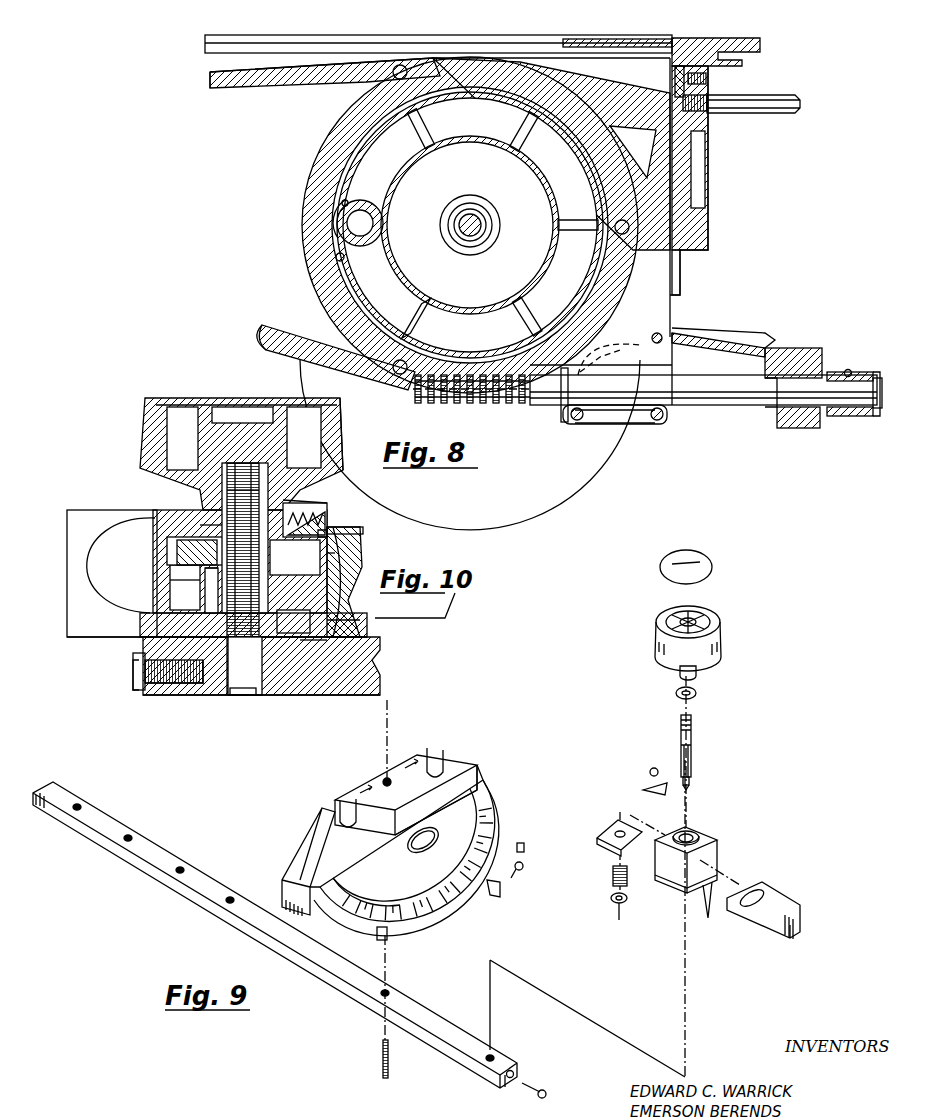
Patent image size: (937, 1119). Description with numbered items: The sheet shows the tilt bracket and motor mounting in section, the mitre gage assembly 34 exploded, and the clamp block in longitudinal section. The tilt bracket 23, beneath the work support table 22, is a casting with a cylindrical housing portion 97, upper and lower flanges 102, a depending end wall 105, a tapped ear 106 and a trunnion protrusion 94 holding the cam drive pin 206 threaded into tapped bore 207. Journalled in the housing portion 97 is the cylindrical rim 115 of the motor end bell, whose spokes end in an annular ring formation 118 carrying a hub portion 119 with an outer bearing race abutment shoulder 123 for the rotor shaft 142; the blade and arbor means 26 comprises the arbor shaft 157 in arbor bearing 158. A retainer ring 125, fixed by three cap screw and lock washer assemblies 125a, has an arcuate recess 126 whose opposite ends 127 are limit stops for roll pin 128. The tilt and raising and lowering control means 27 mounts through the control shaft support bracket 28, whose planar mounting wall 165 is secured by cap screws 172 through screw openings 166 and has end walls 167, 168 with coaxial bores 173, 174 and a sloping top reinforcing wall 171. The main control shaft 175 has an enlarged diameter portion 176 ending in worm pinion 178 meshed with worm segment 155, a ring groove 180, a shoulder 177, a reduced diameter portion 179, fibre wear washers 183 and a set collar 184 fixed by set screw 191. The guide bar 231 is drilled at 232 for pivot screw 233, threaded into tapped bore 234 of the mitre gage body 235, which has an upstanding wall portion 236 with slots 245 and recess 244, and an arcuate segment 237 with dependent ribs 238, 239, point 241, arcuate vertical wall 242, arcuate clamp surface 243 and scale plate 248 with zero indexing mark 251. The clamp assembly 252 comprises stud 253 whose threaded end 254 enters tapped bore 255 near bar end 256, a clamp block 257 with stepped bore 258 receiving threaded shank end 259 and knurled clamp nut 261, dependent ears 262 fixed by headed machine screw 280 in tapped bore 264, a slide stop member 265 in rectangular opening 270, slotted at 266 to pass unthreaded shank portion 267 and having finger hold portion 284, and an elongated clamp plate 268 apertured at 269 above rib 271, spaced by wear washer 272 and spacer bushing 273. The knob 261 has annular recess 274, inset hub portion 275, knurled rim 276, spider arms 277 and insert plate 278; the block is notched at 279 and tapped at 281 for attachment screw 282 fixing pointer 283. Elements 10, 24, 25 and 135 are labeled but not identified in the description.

In FIG. 9, the assembly axis 10 is at (640, 819).
In FIG. 8, the work support table 22 is at (712, 44).
In FIG. 8, the tilt bracket 23 is at (264, 361).
In FIG. 8, the housing 24 is at (705, 140).
In FIG. 8, the screw 25 is at (706, 79).
In FIG. 8, the blade and arbor means 26 is at (336, 257).
In FIG. 8, the tilt and raising and lowering control means 27 is at (703, 325).
In FIG. 8, the control shaft support bracket 28 is at (772, 342).
In FIG. 10, the mitre gage assembly 34 is at (291, 712).
In FIG. 9, the mitre gage assembly 34 is at (290, 798).
In FIG. 8, the trunnion protrusion 94 is at (700, 118).
In FIG. 8, the cylindrical housing portion 97 is at (372, 104).
In FIG. 8, the upper and lower flanges 102 is at (236, 85).
In FIG. 8, the depending end wall 105 is at (700, 160).
In FIG. 8, the tapped ear 106 is at (680, 230).
In FIG. 8, the cylindrical rim 115 is at (345, 124).
In FIG. 8, the annular ring formation 118 is at (472, 225).
In FIG. 8, the hub portion 119 is at (493, 219).
In FIG. 8, the outer bearing race abutment shoulder 123 is at (480, 215).
In FIG. 8, the retainer ring 125 is at (416, 54).
In FIG. 8, the cap screw and lock washer assemblies 125a is at (401, 64).
In FIG. 8, the arcuate recess 126 is at (352, 152).
In FIG. 8, the opposite ends of arcuate recess 127 is at (347, 205).
In FIG. 8, the roll pin 128 is at (345, 196).
In FIG. 8, the disc 135 is at (470, 225).
In FIG. 8, the rotor shaft 142 is at (480, 232).
In FIG. 8, the worm segment 155 is at (498, 405).
In FIG. 8, the arbor shaft 157 is at (370, 225).
In FIG. 8, the arbor bearing 158 is at (384, 212).
In FIG. 8, the planar mounting wall 165 is at (630, 420).
In FIG. 8, the through screw openings 166 is at (660, 335).
In FIG. 8, the end wall 167 is at (588, 358).
In FIG. 8, the end wall 168 is at (785, 430).
In FIG. 8, the sloping top reinforcing wall 171 is at (745, 340).
In FIG. 8, the cap screws 172 is at (568, 424).
In FIG. 8, the through bore 173 is at (598, 372).
In FIG. 8, the through bore 174 is at (812, 348).
In FIG. 8, the main control shaft 175 is at (735, 412).
In FIG. 8, the enlarged diameter portion 176 is at (617, 420).
In FIG. 8, the shoulder 177 is at (773, 412).
In FIG. 8, the worm pinion 178 is at (448, 400).
In FIG. 8, the reduced diameter portion 179 is at (883, 392).
In FIG. 8, the ring groove 180 is at (561, 408).
In FIG. 8, the fibre wear washer 183 is at (768, 372).
In FIG. 8, the set collar 184 is at (876, 372).
In FIG. 8, the set screw 191 is at (855, 358).
In FIG. 8, the cam drive pin 206 is at (775, 96).
In FIG. 8, the tapped bore 207 is at (712, 96).
In FIG. 10, the slide or guide bar 231 is at (372, 660).
In FIG. 9, the slide or guide bar 231 is at (148, 842).
In FIG. 9, the drilled hole 232 is at (388, 993).
In FIG. 9, the pivot screw 233 is at (389, 1066).
In FIG. 9, the tapped bore 234 is at (386, 778).
In FIG. 10, the mitre gage body 235 is at (360, 542).
In FIG. 9, the mitre gage body 235 is at (467, 800).
In FIG. 9, the upstanding wall portion 236 is at (455, 763).
In FIG. 9, the arcuate segment 237 is at (290, 866).
In FIG. 10, the dependent rib 238 is at (318, 647).
In FIG. 9, the dependent rib 238 is at (500, 893).
In FIG. 9, the dependent ribs 239 is at (524, 848).
In FIG. 10, the point 241 is at (333, 554).
In FIG. 9, the point 241 is at (403, 808).
In FIG. 9, the arcuate vertical wall 242 is at (507, 817).
In FIG. 10, the arcuate clamp surface 243 is at (325, 562).
In FIG. 9, the arcuate clamp surface 243 is at (513, 830).
In FIG. 9, the circular laterally centered recess 244 is at (418, 842).
In FIG. 9, the upwardly opening slots 245 is at (342, 800).
In FIG. 10, the arcuate scale plate 248 is at (363, 528).
In FIG. 9, the arcuate scale plate 248 is at (407, 872).
In FIG. 9, the zero indexing mark 251 is at (468, 836).
In FIG. 9, the clamp assembly 252 is at (704, 726).
In FIG. 10, the upstanding stud 253 is at (245, 578).
In FIG. 9, the upstanding stud 253 is at (692, 745).
In FIG. 10, the reduced diameter threaded end 254 is at (243, 690).
In FIG. 9, the reduced diameter threaded end 254 is at (691, 768).
In FIG. 10, the tapped bore 255 is at (238, 700).
In FIG. 9, the tapped bore 255 is at (492, 1056).
In FIG. 9, the end face of bar 256 is at (514, 1072).
In FIG. 10, the clamp block 257 is at (190, 517).
In FIG. 9, the clamp block 257 is at (717, 847).
In FIG. 10, the stepped through vertical bore 258 is at (202, 533).
In FIG. 9, the stepped through vertical bore 258 is at (699, 836).
In FIG. 10, the threaded shank end 259 is at (222, 507).
In FIG. 9, the threaded shank end 259 is at (680, 723).
In FIG. 10, the knurled clamp nut 261 is at (130, 430).
In FIG. 9, the knurled clamp nut 261 is at (728, 614).
In FIG. 10, the dependent laterally spaced ears 262 is at (153, 692).
In FIG. 9, the dependent laterally spaced ears 262 is at (707, 911).
In FIG. 10, the tapped bore 264 is at (183, 695).
In FIG. 9, the tapped bore 264 is at (510, 1077).
In FIG. 10, the slide stop member 265 is at (88, 648).
In FIG. 9, the slide stop member 265 is at (757, 942).
In FIG. 10, the slot 266 is at (337, 630).
In FIG. 9, the slot 266 is at (752, 896).
In FIG. 10, the unthreaded shank portion 267 is at (142, 625).
In FIG. 9, the unthreaded shank portion 267 is at (680, 748).
In FIG. 10, the elongated clamp plate 268 is at (170, 552).
In FIG. 9, the elongated clamp plate 268 is at (613, 843).
In FIG. 10, the aperture 269 is at (245, 538).
In FIG. 9, the aperture 269 is at (617, 818).
In FIG. 10, the rectangular opening 270 is at (142, 634).
In FIG. 9, the rectangular opening 270 is at (683, 883).
In FIG. 10, the inwardly extending rib 271 is at (168, 593).
In FIG. 10, the wear washer 272 is at (292, 621).
In FIG. 9, the wear washer 272 is at (627, 900).
In FIG. 10, the spacer bushing 273 is at (212, 588).
In FIG. 9, the spacer bushing 273 is at (612, 876).
In FIG. 10, the annular recess 274 is at (155, 397).
In FIG. 9, the annular recess 274 is at (668, 630).
In FIG. 10, the inset hub portion 275 is at (285, 450).
In FIG. 9, the inset hub portion 275 is at (712, 630).
In FIG. 10, the knurled rim 276 is at (343, 413).
In FIG. 9, the knurled rim 276 is at (660, 655).
In FIG. 9, the spider arms 277 is at (682, 616).
In FIG. 10, the snap-in insert plate 278 is at (203, 397).
In FIG. 9, the snap-in insert plate 278 is at (710, 563).
In FIG. 10, the notch 279 is at (326, 500).
In FIG. 9, the notch 279 is at (670, 830).
In FIG. 10, the headed machine screw 280 is at (133, 670).
In FIG. 9, the headed machine screw 280 is at (546, 1094).
In FIG. 10, the drilled and tapped hole 281 is at (327, 526).
In FIG. 10, the attachment screw 282 is at (297, 518).
In FIG. 9, the attachment screw 282 is at (652, 768).
In FIG. 10, the pointer 283 is at (324, 518).
In FIG. 9, the pointer 283 is at (645, 788).
In FIG. 10, the finger hold portion 284 is at (102, 547).
In FIG. 9, the finger hold portion 284 is at (795, 930).